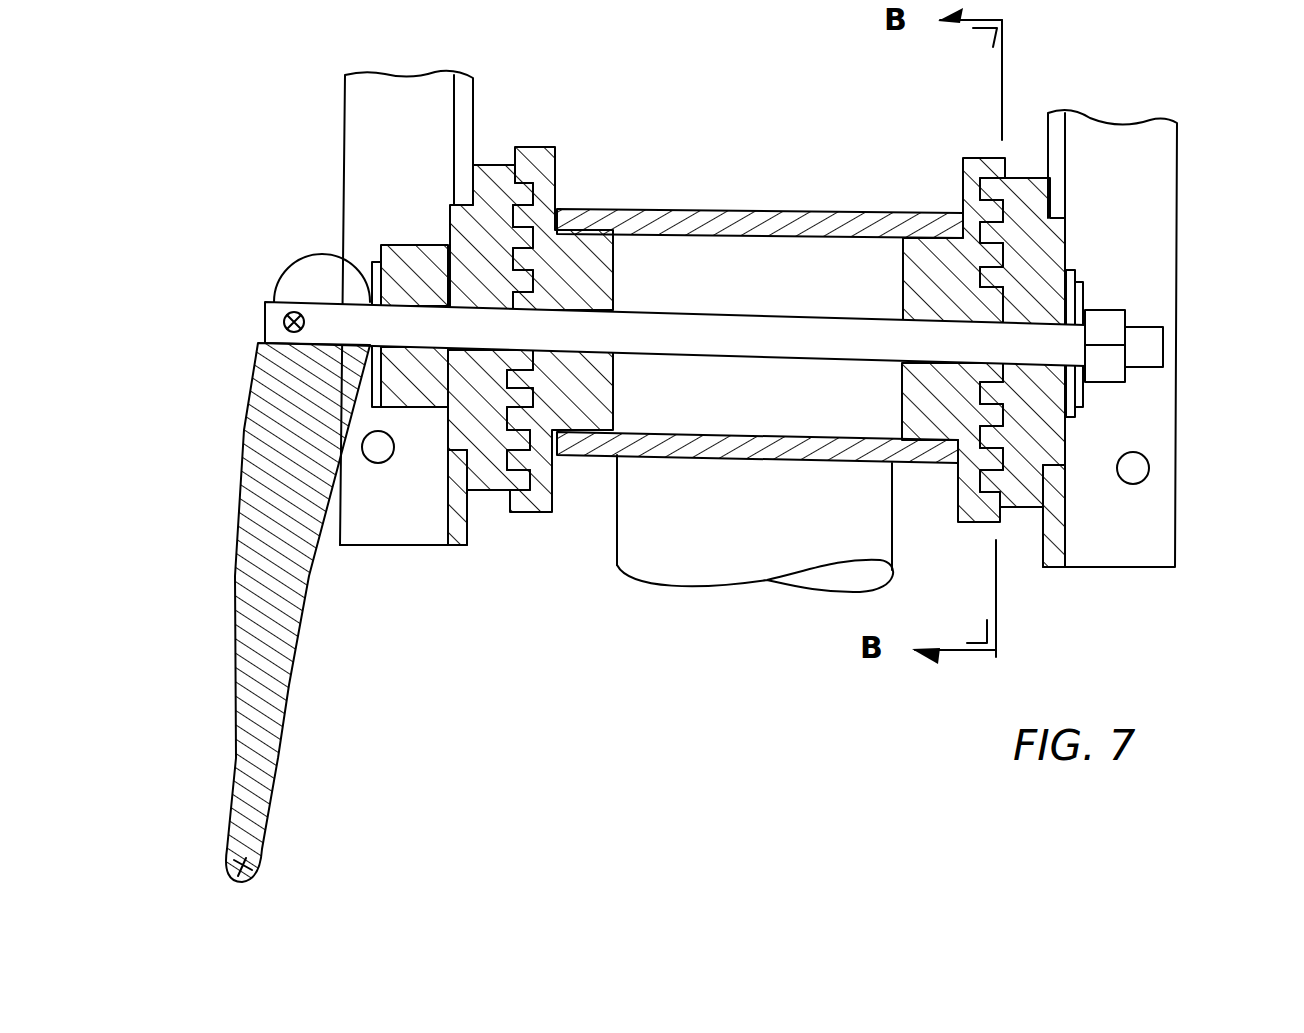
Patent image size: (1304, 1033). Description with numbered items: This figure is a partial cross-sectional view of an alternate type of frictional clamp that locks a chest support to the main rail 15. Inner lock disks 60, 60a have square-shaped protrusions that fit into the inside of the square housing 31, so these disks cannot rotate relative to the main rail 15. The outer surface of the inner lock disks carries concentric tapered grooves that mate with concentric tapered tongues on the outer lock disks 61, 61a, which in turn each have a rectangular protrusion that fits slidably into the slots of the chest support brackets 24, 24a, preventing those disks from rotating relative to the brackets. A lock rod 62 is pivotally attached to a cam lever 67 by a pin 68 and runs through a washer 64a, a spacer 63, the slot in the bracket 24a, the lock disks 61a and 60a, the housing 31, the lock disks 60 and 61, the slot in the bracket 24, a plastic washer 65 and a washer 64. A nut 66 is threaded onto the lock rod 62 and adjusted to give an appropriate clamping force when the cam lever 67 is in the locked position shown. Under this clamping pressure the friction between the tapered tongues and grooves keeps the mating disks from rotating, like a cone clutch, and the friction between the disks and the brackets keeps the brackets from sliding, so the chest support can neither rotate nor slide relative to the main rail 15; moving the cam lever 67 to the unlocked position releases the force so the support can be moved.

The main rail 15 is at (626, 587).
The chest support bracket 24 is at (1110, 573).
The chest support bracket 24a is at (414, 552).
The square housing 31 is at (610, 204).
The inner lock disk 60 is at (969, 150).
The inner lock disk 60a is at (536, 141).
The outer lock disk 61 is at (1021, 172).
The outer lock disk 61a is at (485, 156).
The lock rod 62 is at (675, 300).
The spacer 63 is at (388, 237).
The washer 64 is at (1088, 288).
The washer 64a is at (368, 263).
The plastic washer 65 is at (1080, 268).
The nut 66 is at (1135, 311).
The cam lever 67 is at (236, 437).
The pin 68 is at (280, 322).